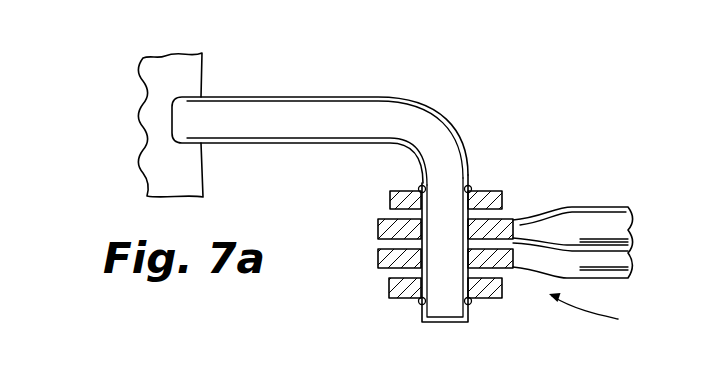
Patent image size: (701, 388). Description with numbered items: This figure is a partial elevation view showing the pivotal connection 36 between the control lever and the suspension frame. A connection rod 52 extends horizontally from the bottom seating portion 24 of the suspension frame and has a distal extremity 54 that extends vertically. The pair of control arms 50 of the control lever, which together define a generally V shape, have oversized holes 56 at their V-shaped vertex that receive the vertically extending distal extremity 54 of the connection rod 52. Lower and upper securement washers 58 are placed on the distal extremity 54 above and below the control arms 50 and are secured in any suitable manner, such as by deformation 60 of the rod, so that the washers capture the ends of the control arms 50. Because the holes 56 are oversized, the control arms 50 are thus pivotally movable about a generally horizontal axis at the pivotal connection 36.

The bottom seating portion 24 is at (187, 77).
The connection rod 52 is at (303, 97).
The distal extremity 54 is at (443, 193).
The oversized holes 56 is at (418, 249).
The securement washers 58 is at (390, 197).
The deformation 60 is at (418, 187).
The control arms 50 is at (597, 257).
The pivotal connection 36 is at (599, 314).